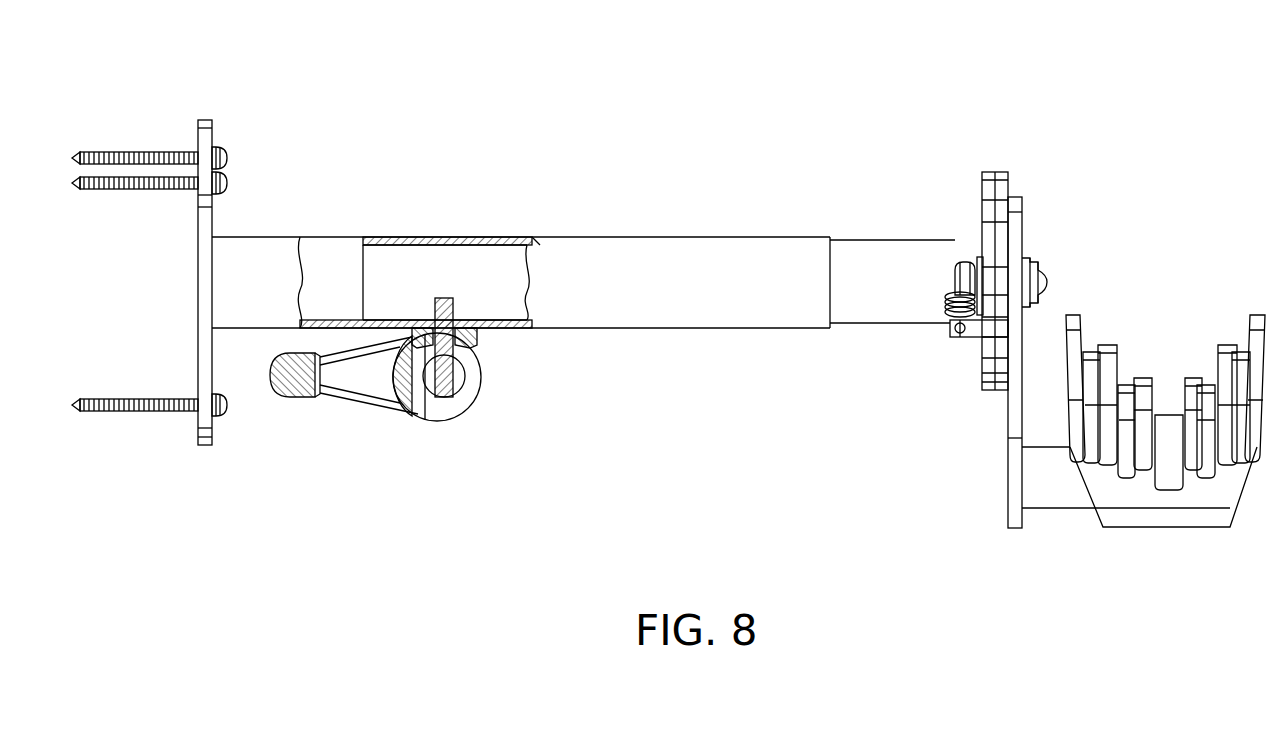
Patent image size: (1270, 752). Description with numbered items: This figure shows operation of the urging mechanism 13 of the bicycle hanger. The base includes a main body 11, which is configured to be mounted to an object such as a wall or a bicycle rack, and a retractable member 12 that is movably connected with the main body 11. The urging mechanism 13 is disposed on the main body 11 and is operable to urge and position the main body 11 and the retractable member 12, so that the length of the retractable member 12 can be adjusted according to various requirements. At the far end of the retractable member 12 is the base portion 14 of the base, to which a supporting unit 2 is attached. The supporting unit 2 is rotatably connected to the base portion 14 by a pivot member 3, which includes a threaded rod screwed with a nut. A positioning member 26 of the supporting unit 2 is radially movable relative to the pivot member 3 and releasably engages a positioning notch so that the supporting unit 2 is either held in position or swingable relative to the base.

The main body 11 is at (342, 237).
The retractable member 12 is at (520, 252).
The urging mechanism 13 is at (506, 391).
The base portion 14 is at (994, 172).
The pivot member 3 is at (961, 255).
The positioning member 26 is at (973, 332).
The supporting unit 2 is at (986, 526).